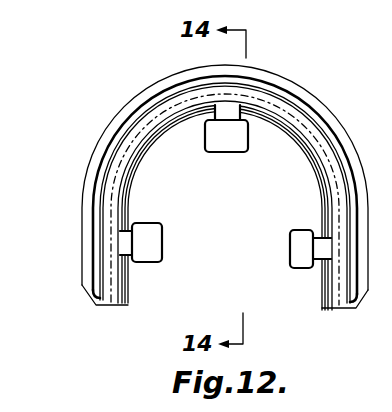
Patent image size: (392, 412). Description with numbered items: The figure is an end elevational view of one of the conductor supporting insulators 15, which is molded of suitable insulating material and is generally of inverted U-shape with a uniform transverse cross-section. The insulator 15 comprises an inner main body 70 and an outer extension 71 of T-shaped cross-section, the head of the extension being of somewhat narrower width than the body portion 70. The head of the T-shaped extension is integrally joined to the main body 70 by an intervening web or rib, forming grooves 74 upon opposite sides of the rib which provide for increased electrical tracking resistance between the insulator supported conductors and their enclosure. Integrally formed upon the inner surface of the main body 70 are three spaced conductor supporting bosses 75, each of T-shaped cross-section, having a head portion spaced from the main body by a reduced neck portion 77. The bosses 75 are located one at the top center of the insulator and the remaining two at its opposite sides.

The insulator 15 is at (306, 108).
The inner main body 70 is at (132, 154).
The outer extension 71 is at (91, 161).
The grooves 74 is at (140, 116).
The conductor supporting bosses 75 is at (223, 138).
The reduced neck portion 77 is at (222, 117).